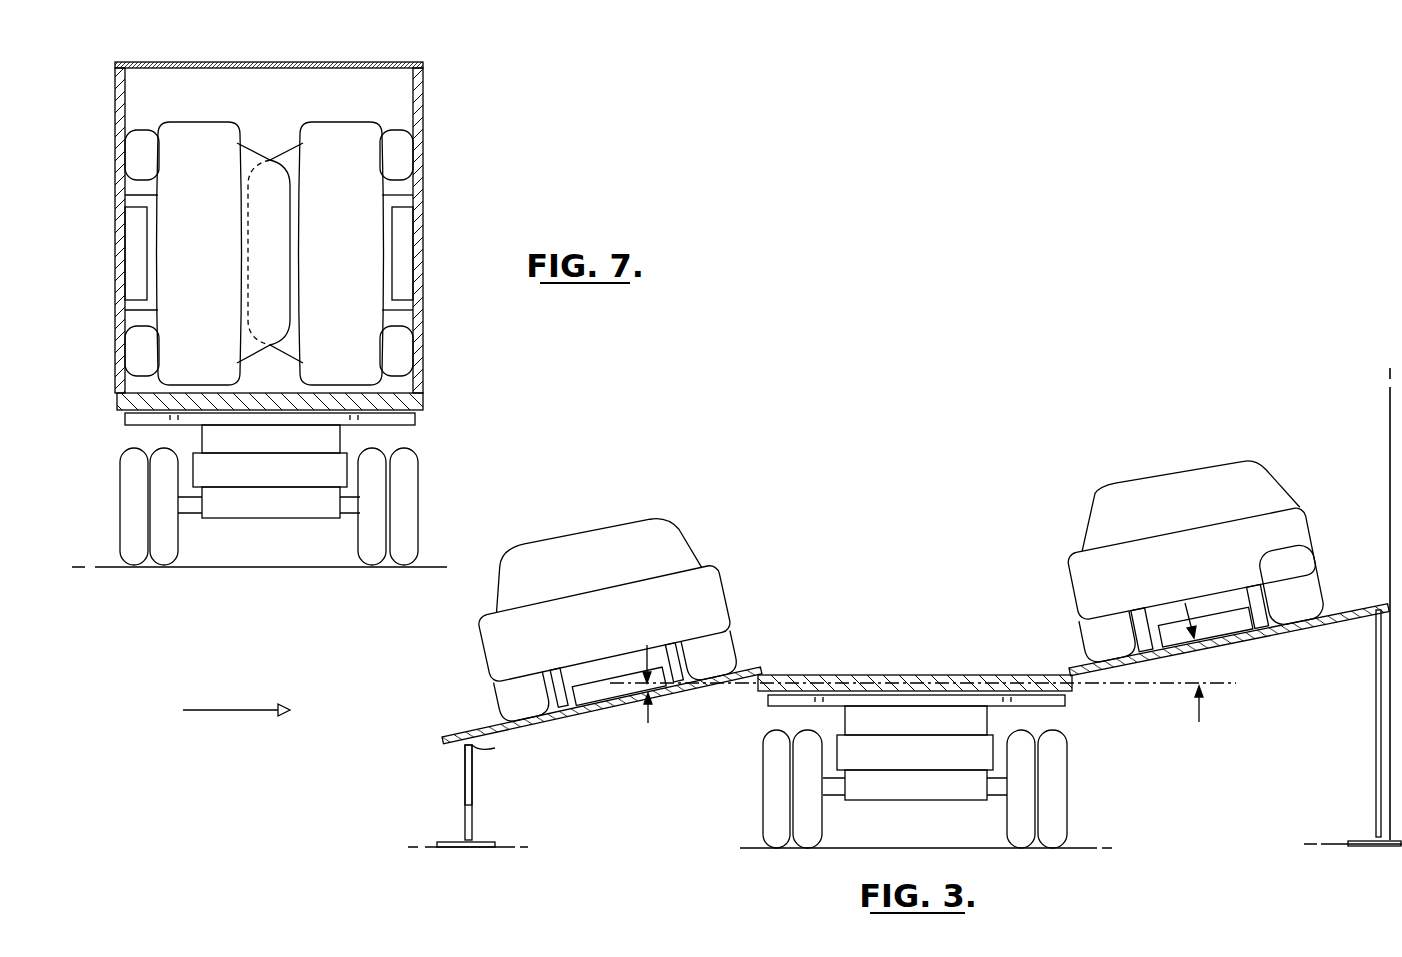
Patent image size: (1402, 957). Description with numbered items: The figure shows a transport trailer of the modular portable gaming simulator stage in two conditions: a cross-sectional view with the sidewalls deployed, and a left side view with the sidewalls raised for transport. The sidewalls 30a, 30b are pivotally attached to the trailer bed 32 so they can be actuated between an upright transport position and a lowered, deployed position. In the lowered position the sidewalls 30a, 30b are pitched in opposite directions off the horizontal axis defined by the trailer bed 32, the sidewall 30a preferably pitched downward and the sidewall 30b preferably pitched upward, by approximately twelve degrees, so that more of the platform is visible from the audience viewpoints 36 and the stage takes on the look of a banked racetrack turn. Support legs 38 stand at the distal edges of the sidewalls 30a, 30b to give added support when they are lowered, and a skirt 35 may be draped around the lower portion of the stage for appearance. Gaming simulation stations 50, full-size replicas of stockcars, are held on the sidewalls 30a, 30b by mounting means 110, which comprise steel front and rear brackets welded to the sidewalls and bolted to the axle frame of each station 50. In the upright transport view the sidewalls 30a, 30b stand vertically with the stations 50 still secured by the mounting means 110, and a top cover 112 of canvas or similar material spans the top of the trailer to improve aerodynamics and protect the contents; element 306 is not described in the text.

In FIG. 7, the sidewall 30a is at (115, 293).
In FIG. 3, the sidewall 30a is at (463, 751).
In FIG. 3, the sidewall 30b is at (1248, 643).
In FIG. 7, the trailer bed 32 is at (252, 393).
In FIG. 3, the trailer bed 32 is at (887, 675).
In FIG. 3, the skirt 35 is at (463, 787).
In FIG. 3, the audience viewpoints 36 is at (236, 732).
In FIG. 3, the support legs 38 is at (470, 803).
In FIG. 7, the gaming simulation stations 50 is at (203, 130).
In FIG. 3, the gaming simulation stations 50 is at (610, 533).
In FIG. 7, the mounting means 110 is at (132, 207).
In FIG. 3, the mounting means 110 is at (587, 697).
In FIG. 7, the top cover 112 is at (393, 62).
In FIG. 7, the side wall 306 is at (423, 230).